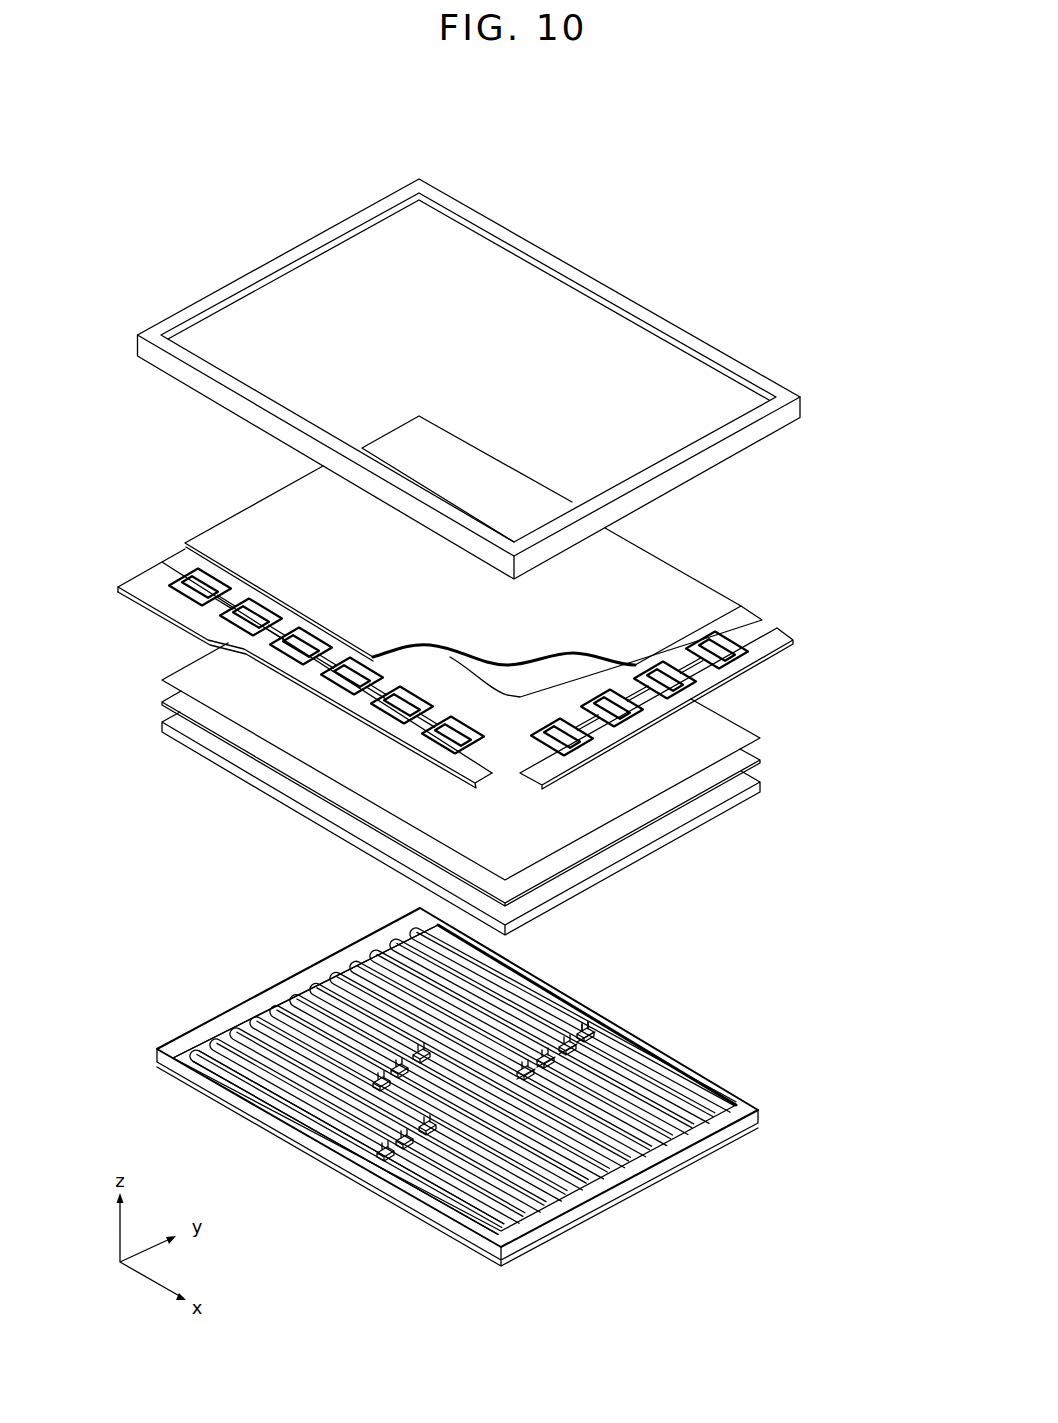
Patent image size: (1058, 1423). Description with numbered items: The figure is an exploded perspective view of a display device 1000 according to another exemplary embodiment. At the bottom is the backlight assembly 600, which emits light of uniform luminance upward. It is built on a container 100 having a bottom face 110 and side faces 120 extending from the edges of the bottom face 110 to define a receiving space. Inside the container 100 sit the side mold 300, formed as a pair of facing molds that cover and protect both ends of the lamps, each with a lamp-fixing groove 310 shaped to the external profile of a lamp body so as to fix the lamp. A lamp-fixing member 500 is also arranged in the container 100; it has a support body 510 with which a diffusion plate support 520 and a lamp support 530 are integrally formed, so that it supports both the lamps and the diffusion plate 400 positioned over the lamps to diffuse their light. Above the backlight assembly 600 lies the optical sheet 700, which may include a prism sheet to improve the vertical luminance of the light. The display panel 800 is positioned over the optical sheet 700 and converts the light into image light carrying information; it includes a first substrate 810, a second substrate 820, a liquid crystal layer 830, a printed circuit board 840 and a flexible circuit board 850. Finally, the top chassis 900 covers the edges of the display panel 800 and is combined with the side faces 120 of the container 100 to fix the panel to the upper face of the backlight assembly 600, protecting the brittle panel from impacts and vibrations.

The display device 1000 is at (423, 152).
The top chassis 900 is at (645, 284).
The display panel 800 is at (730, 563).
The second substrate 820 is at (670, 585).
The liquid crystal layer 830 is at (577, 665).
The printed circuit board 840 is at (147, 578).
The first substrate 810 is at (737, 627).
The flexible circuit board 850 is at (207, 577).
The optical sheet 700 is at (733, 733).
The diffusion plate 400 is at (742, 785).
The backlight assembly 600 is at (843, 1160).
The side mold 300 is at (629, 1170).
The lamp-fixing groove 310 is at (203, 1053).
The container 100 is at (299, 1097).
The bottom face 110 is at (327, 1168).
The side faces 120 is at (380, 1187).
The lamp-fixing member 500 is at (587, 1064).
The support body 510 is at (570, 1063).
The diffusion plate support 520 is at (570, 1060).
The lamp support 530 is at (648, 1006).